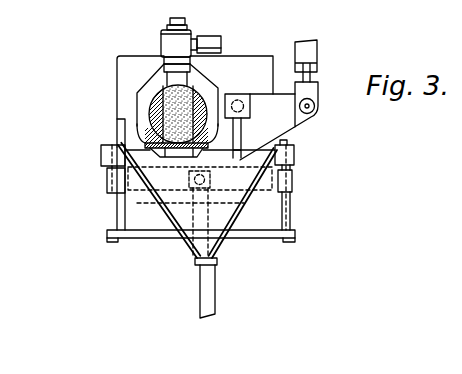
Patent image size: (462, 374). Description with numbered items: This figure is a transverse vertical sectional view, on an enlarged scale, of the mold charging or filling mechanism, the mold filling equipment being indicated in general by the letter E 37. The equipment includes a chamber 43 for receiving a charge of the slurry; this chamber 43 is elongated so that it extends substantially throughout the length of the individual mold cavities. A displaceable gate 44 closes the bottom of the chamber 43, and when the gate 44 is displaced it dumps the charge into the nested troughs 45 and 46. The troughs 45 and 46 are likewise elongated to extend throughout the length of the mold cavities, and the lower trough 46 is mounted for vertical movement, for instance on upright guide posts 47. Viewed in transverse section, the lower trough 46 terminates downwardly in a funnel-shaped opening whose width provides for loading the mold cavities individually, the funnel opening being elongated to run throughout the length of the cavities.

The element of adjacent figure 37 is at (377, 0).
The ball valve assembly E is at (114, 101).
The chamber 43 is at (196, 101).
The displaceable gate 44 is at (172, 154).
The trough 45 is at (200, 211).
The lower trough 46 is at (165, 214).
The upright guide posts 47 is at (117, 206).